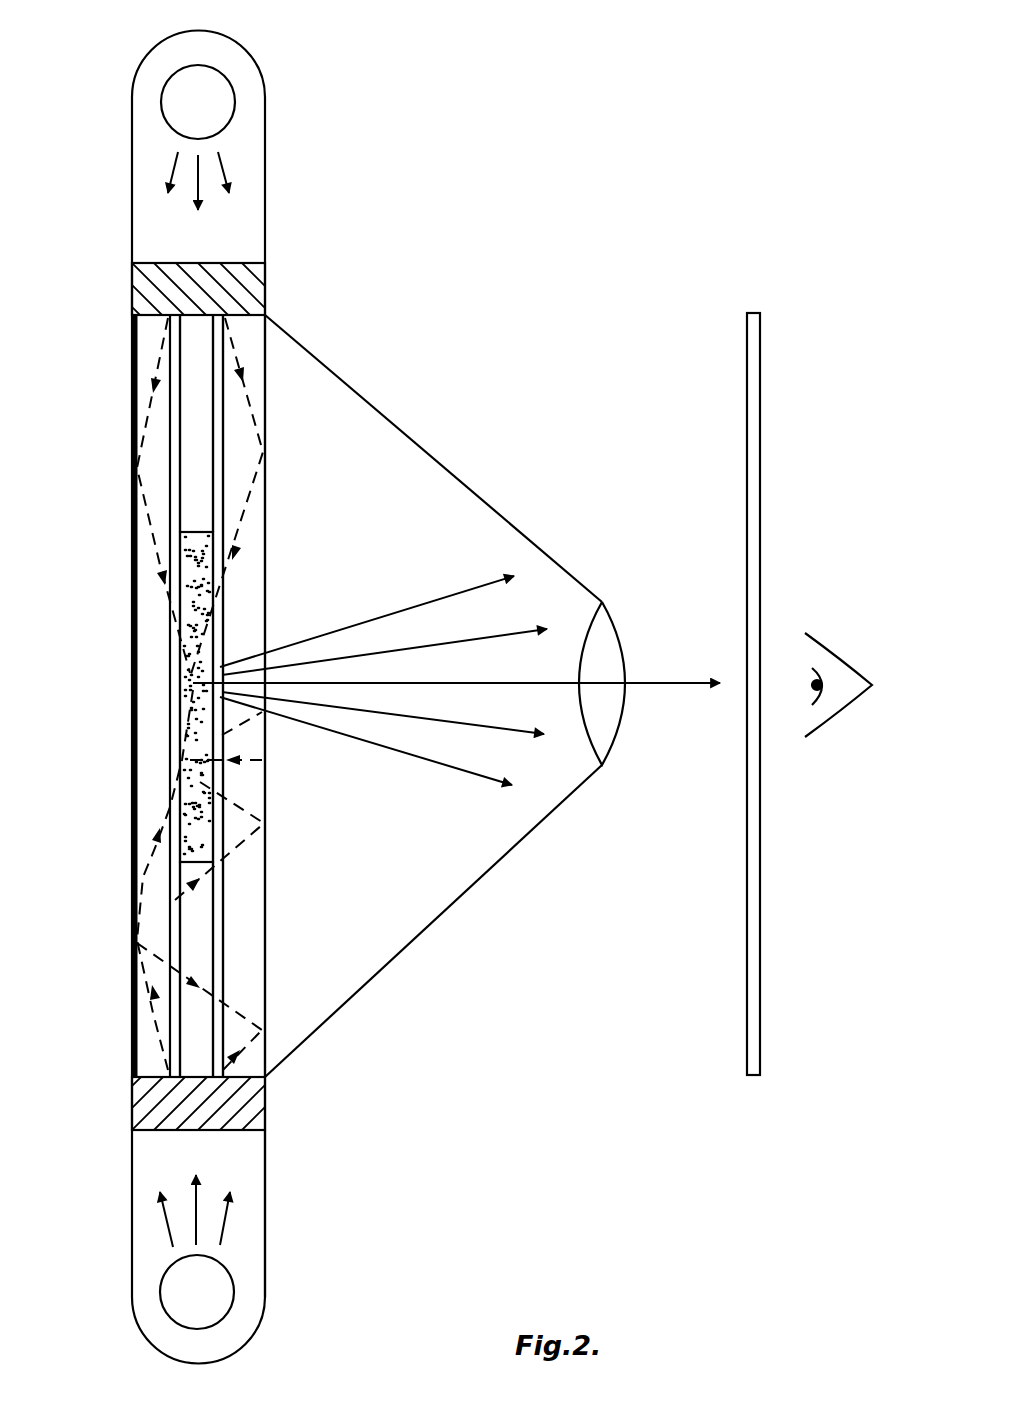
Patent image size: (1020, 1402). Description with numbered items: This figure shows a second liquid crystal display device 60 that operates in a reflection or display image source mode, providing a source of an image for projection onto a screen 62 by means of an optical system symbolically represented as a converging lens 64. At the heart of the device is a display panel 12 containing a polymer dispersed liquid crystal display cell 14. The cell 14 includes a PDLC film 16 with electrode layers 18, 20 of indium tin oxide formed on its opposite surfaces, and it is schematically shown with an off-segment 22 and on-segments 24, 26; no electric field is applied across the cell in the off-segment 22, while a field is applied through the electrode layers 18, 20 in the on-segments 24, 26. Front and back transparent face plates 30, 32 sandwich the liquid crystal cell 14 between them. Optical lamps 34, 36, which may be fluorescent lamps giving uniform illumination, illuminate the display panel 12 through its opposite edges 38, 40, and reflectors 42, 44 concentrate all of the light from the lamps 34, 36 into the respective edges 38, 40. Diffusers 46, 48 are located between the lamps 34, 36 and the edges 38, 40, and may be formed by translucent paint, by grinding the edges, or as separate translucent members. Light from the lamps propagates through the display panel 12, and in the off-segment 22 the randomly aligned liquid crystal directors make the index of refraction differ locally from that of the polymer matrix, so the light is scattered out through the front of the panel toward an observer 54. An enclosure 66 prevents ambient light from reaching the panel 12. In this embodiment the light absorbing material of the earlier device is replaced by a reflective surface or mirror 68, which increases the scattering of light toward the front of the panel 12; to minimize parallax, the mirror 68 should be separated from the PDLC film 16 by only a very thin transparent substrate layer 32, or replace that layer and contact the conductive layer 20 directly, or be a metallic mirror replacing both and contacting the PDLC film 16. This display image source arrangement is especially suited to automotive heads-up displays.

The display panel 12 is at (398, 306).
The polymer dispersed liquid crystal display cell 14 is at (238, 472).
The PDLC film 16 is at (200, 915).
The electrode layer 18 is at (223, 818).
The electrode layer 20 is at (170, 924).
The off-segment 22 is at (198, 597).
The on-segment 24 is at (193, 388).
The on-segment 26 is at (193, 872).
The front transparent face plate 30 is at (248, 607).
The back transparent face plate 32 is at (140, 497).
The optical lamp 34 is at (210, 97).
The optical lamp 36 is at (213, 1292).
The edge 38 is at (205, 308).
The edge 40 is at (250, 1081).
The reflector 42 is at (265, 113).
The reflector 44 is at (265, 1199).
The diffuser 46 is at (258, 290).
The diffuser 48 is at (145, 1100).
The observer 54 is at (810, 735).
The second liquid crystal display device 60 is at (468, 338).
The screen 62 is at (745, 353).
The converging lens 64 is at (612, 612).
The enclosure 66 is at (442, 460).
The reflective surface or mirror 68 is at (134, 540).